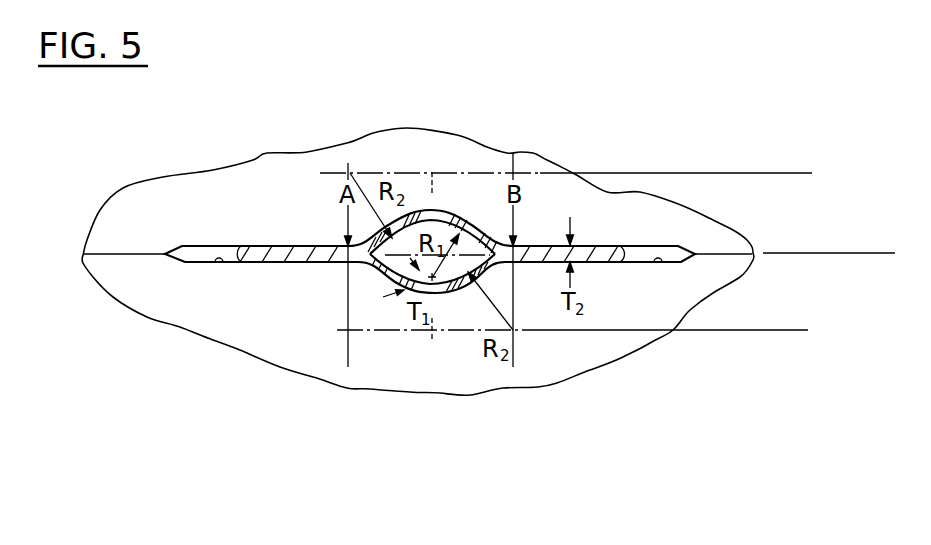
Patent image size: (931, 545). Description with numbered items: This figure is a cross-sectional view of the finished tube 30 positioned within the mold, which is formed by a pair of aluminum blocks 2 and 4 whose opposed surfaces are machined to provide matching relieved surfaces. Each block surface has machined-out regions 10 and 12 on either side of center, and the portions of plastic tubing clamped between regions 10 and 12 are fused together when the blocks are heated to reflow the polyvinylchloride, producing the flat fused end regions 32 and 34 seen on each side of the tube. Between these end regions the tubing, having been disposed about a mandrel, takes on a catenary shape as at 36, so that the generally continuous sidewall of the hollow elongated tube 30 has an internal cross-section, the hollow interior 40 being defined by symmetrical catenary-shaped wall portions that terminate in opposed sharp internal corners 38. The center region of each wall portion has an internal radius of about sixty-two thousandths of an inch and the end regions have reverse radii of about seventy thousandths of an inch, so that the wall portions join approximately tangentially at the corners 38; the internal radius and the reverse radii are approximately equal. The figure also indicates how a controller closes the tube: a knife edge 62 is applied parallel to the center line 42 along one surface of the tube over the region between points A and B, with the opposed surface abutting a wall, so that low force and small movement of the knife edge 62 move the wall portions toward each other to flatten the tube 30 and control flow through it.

The aluminum block 2 is at (710, 192).
The aluminum block 4 is at (703, 313).
The region 10 is at (222, 264).
The region 12 is at (660, 263).
The tube 30 is at (493, 234).
The end region 32 is at (302, 262).
The end region 34 is at (580, 245).
The catenary shape 36 is at (423, 205).
The sharp internal corner 38 is at (457, 289).
The inner cavity 40 is at (441, 275).
The center line 42 is at (773, 257).
The knife edge 62 is at (432, 198).